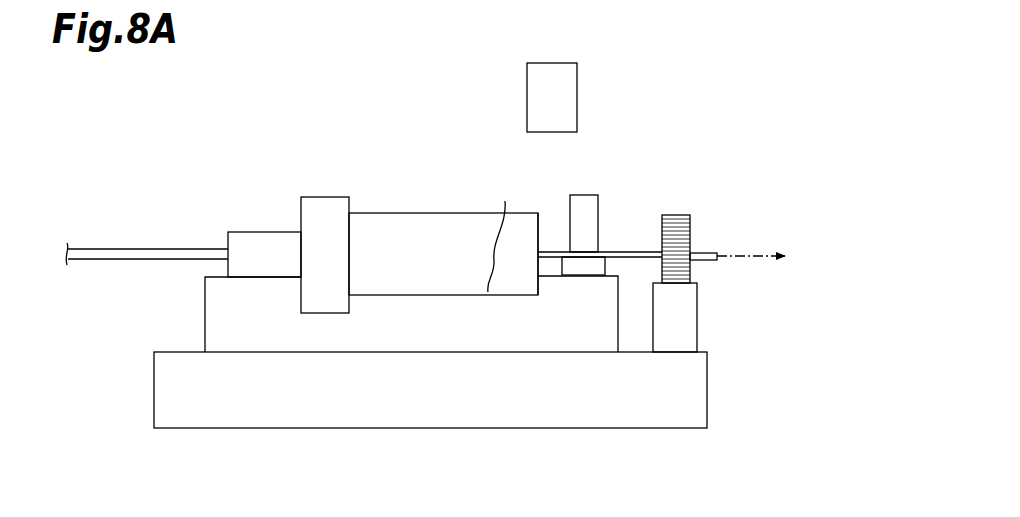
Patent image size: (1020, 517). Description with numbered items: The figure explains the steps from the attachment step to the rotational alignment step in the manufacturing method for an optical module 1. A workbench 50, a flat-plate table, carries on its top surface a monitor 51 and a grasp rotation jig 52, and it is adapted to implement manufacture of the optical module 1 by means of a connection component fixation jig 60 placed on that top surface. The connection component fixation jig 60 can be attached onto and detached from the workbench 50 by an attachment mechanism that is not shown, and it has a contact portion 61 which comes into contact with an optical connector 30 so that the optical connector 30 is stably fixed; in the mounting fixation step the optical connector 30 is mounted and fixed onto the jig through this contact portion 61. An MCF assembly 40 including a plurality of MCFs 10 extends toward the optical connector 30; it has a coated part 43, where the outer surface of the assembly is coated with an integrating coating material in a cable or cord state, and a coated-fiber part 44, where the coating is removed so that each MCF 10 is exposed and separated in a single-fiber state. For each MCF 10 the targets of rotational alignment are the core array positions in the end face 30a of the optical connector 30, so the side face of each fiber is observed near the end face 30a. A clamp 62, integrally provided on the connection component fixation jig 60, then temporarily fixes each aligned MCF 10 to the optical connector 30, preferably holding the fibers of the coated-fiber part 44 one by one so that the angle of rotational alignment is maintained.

The optical module 1 is at (288, 150).
The MCF 10 is at (135, 228).
The MCF assembly 40 is at (92, 249).
The coated part 43 is at (168, 248).
The optical connector 30 is at (426, 191).
The end face 30a is at (538, 233).
The contact portion 61 is at (504, 233).
The clamp 62 is at (585, 194).
The coated-fiber part 44 is at (625, 250).
The grasp rotation jig 52 is at (676, 215).
The monitor 51 is at (553, 62).
The workbench 50 is at (660, 429).
The connection component fixation jig 60 is at (205, 317).